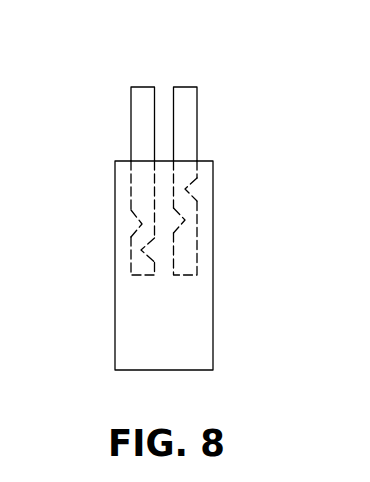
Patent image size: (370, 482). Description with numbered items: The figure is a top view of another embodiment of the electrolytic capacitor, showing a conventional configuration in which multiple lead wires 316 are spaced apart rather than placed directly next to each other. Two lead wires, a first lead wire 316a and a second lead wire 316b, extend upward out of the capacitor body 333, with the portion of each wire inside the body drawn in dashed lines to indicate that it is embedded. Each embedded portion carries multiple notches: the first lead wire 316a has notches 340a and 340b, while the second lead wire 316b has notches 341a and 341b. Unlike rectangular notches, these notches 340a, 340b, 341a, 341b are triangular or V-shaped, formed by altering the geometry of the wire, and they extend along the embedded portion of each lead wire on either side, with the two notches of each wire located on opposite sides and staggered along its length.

The lead wires 316 is at (187, 73).
The first lead wire 316a is at (187, 122).
The second lead wire 316b is at (143, 123).
The housing body 333 is at (246, 313).
The notch 340a is at (188, 192).
The notch 340b is at (182, 224).
The notch 341a is at (139, 227).
The notch 341b is at (153, 266).